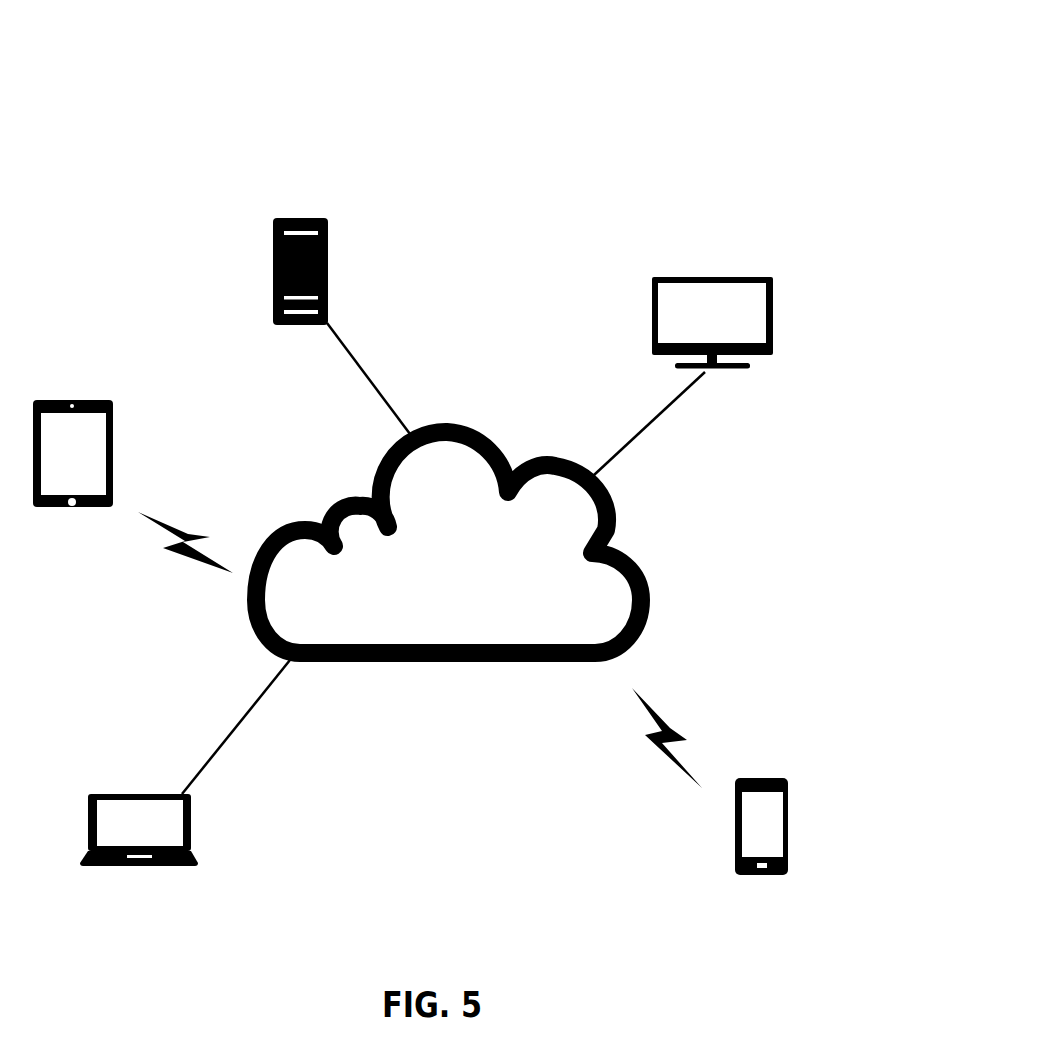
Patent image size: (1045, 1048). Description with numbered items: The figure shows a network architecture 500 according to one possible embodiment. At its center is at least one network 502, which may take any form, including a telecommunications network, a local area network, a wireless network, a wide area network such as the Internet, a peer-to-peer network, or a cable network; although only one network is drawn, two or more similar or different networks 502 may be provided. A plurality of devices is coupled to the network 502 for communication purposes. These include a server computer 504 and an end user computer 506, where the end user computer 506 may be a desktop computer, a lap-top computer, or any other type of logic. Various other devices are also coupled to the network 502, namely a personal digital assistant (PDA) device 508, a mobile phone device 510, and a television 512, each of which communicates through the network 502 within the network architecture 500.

The network architecture 500 is at (76, 91).
The network 502 is at (460, 662).
The server computer 504 is at (300, 218).
The end user computer 506 is at (135, 793).
The personal digital assistant (PDA) device 508 is at (75, 398).
The mobile phone device 510 is at (752, 777).
The television 512 is at (716, 276).